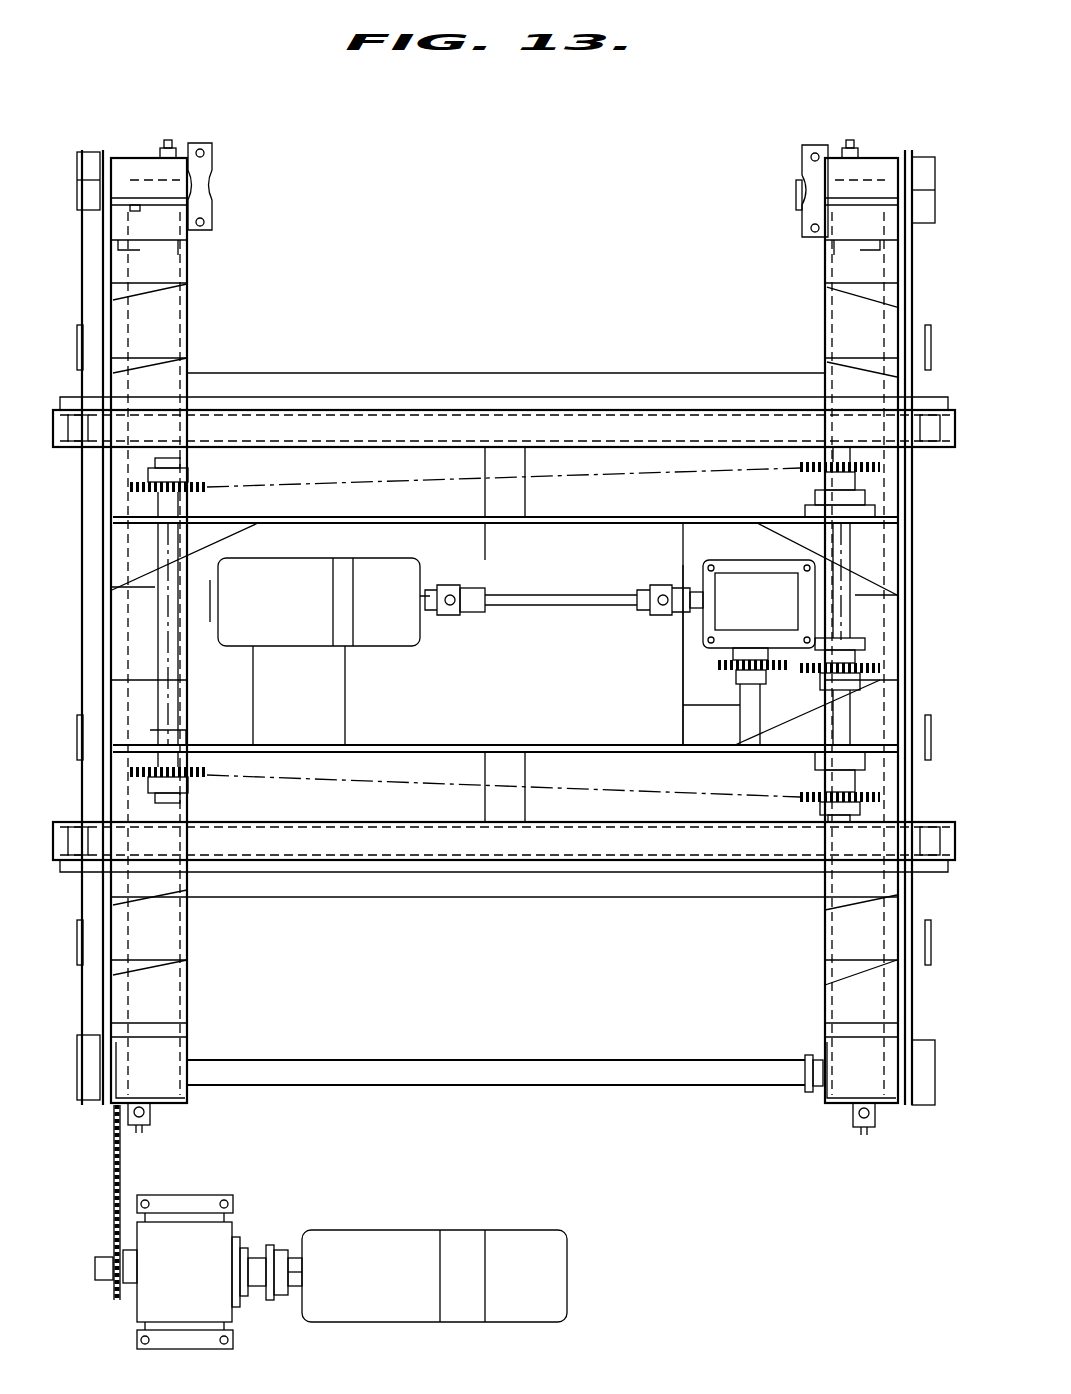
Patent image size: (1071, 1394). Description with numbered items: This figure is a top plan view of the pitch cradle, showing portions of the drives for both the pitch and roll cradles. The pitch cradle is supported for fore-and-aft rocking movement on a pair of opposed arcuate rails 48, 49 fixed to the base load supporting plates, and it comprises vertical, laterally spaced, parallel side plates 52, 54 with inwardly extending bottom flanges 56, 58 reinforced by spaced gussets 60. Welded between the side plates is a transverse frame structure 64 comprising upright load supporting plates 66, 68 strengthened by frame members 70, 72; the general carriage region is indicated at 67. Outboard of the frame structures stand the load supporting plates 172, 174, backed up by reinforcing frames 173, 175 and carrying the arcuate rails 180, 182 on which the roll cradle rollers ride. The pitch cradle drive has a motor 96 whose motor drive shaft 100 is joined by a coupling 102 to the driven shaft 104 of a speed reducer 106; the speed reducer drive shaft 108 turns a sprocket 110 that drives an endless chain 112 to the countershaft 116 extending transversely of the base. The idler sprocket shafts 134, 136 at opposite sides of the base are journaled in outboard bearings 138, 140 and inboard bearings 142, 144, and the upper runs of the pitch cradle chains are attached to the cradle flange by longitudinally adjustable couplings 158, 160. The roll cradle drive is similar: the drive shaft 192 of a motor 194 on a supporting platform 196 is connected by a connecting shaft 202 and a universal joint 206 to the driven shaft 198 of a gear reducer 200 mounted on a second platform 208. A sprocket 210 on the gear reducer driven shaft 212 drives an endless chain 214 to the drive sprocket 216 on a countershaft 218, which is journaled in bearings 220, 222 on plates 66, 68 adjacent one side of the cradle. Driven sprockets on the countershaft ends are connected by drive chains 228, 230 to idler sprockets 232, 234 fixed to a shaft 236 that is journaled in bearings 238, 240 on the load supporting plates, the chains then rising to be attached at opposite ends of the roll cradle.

The rail 48 is at (90, 968).
The rail 49 is at (905, 937).
The side plate 52 is at (113, 178).
The side plate 54 is at (903, 162).
The bottom flange 56 is at (190, 245).
The bottom flange 58 is at (845, 255).
The gusset 60 is at (153, 362).
The transverse frame structure 64 is at (526, 531).
The load supporting plate 66 is at (383, 745).
The carriage frame 67 is at (463, 735).
The load supporting plate 68 is at (395, 525).
The frame member 70 is at (375, 760).
The frame member 72 is at (398, 512).
The motor 96 is at (384, 1283).
The motor drive shaft 100 is at (302, 1268).
The coupling 102 is at (283, 1250).
The driven shaft 104 is at (250, 1262).
The speed reducer 106 is at (200, 1273).
The drive shaft 108 is at (140, 1275).
The sprocket 110 is at (105, 1280).
The endless chain 112 is at (122, 1168).
The countershaft 116 is at (358, 1060).
The shaft 134 is at (140, 168).
The shaft 136 is at (800, 193).
The outboard bearing 138 is at (88, 165).
The outboard bearing 140 is at (935, 178).
The inboard bearing 142 is at (212, 170).
The inboard bearing 144 is at (810, 220).
The longitudinally adjustable coupling 158 is at (176, 152).
The longitudinally adjustable coupling 160 is at (150, 1112).
The load supporting plate 172 is at (378, 872).
The reinforcing frame 173 is at (453, 845).
The load supporting plate 174 is at (705, 410).
The reinforcing frame 175 is at (612, 410).
The arcuate rail 180 is at (598, 888).
The arcuate rail 182 is at (548, 397).
The drive shaft 192 is at (440, 588).
The motor 194 is at (292, 610).
The supporting platform 196 is at (345, 670).
The driven shaft 198 is at (720, 602).
The gear reducer 200 is at (482, 595).
The connecting shaft 202 is at (520, 610).
The universal joint 206 is at (648, 618).
The second platform 208 is at (685, 712).
The sprocket 210 is at (722, 680).
The driven shaft 212 is at (733, 665).
The endless chain 214 is at (790, 700).
The drive sprocket 216 is at (880, 658).
The countershaft 218 is at (847, 613).
The bearing 220 is at (830, 765).
The bearing 222 is at (812, 500).
The drive chain 228 is at (640, 792).
The drive chain 230 is at (590, 482).
The idler sprocket 232 is at (203, 777).
The idler sprocket 234 is at (210, 487).
The shaft 236 is at (185, 668).
The bearing 238 is at (175, 715).
The bearing 240 is at (238, 538).